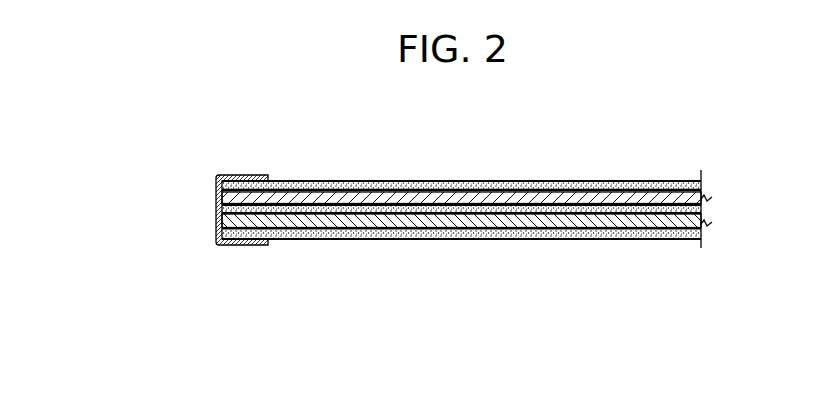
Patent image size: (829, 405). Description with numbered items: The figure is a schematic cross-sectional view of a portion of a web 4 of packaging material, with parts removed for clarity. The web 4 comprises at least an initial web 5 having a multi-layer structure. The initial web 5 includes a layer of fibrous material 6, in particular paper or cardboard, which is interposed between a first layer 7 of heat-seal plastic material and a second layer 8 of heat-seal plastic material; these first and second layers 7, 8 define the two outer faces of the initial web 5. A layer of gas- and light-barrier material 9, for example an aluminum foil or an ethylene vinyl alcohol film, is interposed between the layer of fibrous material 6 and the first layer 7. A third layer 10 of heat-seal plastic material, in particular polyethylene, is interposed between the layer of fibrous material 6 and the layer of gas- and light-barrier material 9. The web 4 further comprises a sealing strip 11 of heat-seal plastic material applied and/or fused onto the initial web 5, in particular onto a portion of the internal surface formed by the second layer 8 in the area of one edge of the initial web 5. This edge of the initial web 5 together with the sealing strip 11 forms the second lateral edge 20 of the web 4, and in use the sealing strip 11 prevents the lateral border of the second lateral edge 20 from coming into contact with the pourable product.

The web 4 is at (130, 160).
The second lateral edge 20 is at (190, 160).
The initial web 5 is at (630, 168).
The layer of fibrous material 6 is at (560, 222).
The first layer 7 is at (384, 232).
The second layer 8 is at (378, 186).
The layer of gas- and light-barrier material 9 is at (524, 197).
The third layer 10 is at (641, 209).
The sealing strip 11 is at (218, 237).